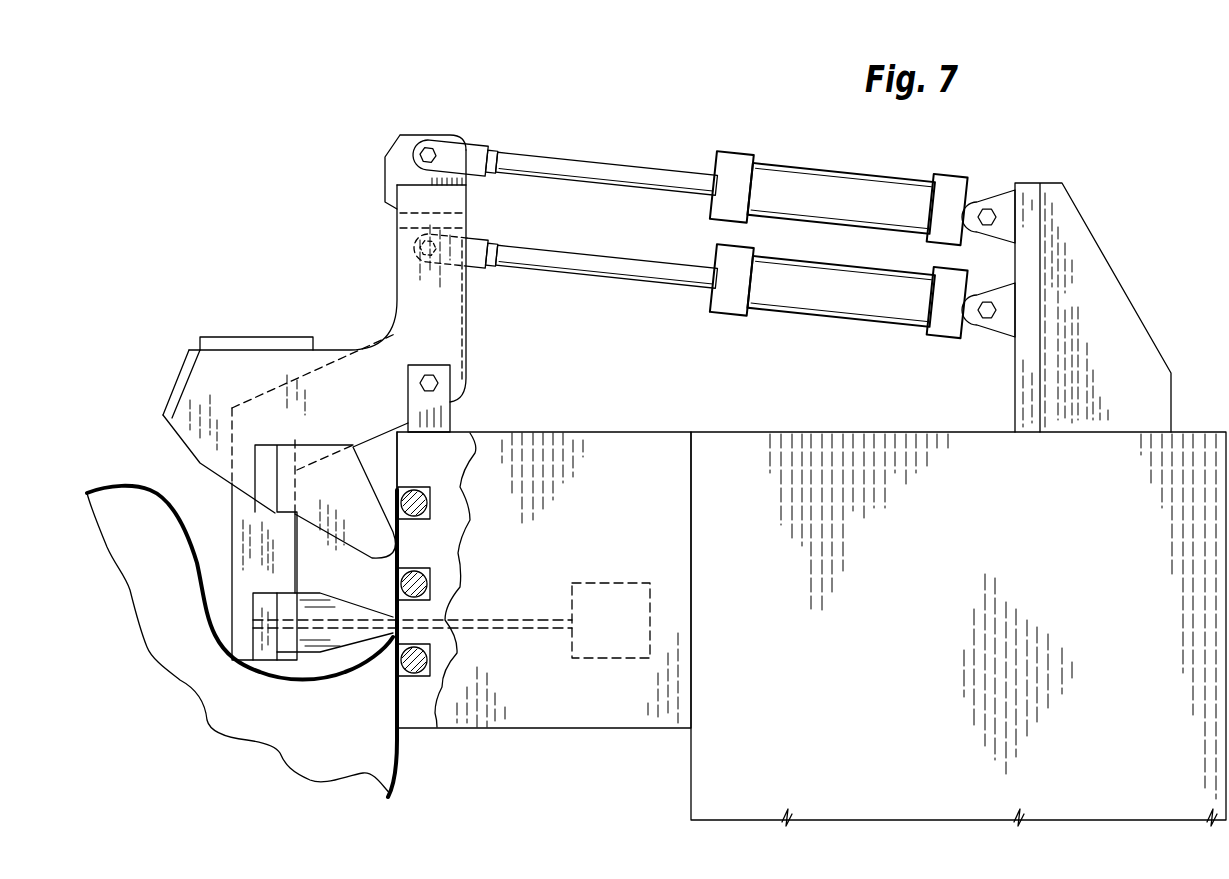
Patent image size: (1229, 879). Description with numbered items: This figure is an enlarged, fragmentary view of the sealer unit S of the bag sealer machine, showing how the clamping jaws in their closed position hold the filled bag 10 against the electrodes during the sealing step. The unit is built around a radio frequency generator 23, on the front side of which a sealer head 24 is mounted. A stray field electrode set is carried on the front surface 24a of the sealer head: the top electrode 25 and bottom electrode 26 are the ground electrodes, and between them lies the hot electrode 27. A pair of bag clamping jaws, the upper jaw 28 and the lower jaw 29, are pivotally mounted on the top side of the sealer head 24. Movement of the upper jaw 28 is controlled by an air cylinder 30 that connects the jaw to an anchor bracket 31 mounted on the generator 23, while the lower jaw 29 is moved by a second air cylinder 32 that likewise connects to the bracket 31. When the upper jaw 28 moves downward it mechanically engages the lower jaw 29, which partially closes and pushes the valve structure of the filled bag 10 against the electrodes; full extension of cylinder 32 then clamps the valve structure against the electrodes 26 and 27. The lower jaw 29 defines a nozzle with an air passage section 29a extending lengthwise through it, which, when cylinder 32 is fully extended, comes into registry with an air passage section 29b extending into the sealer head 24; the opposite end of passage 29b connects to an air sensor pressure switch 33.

The assembly S is at (1130, 152).
The filled bag 10 is at (130, 590).
The radio frequency (RF) generator 23 is at (1108, 617).
The sealer head 24 is at (527, 729).
The front surface 24a is at (393, 453).
The top electrode 25 is at (394, 492).
The bottom electrode 26 is at (397, 667).
The hot electrode 27 is at (397, 588).
The upper jaw 28 is at (195, 383).
The lower jaw 29 is at (233, 577).
The air passage section 29a is at (333, 628).
The air passage section 29b is at (480, 627).
The air cylinder 30 is at (822, 180).
The anchor bracket 31 is at (1124, 320).
The air cylinder 32 is at (862, 310).
The air sensor pressure switch 33 is at (602, 583).